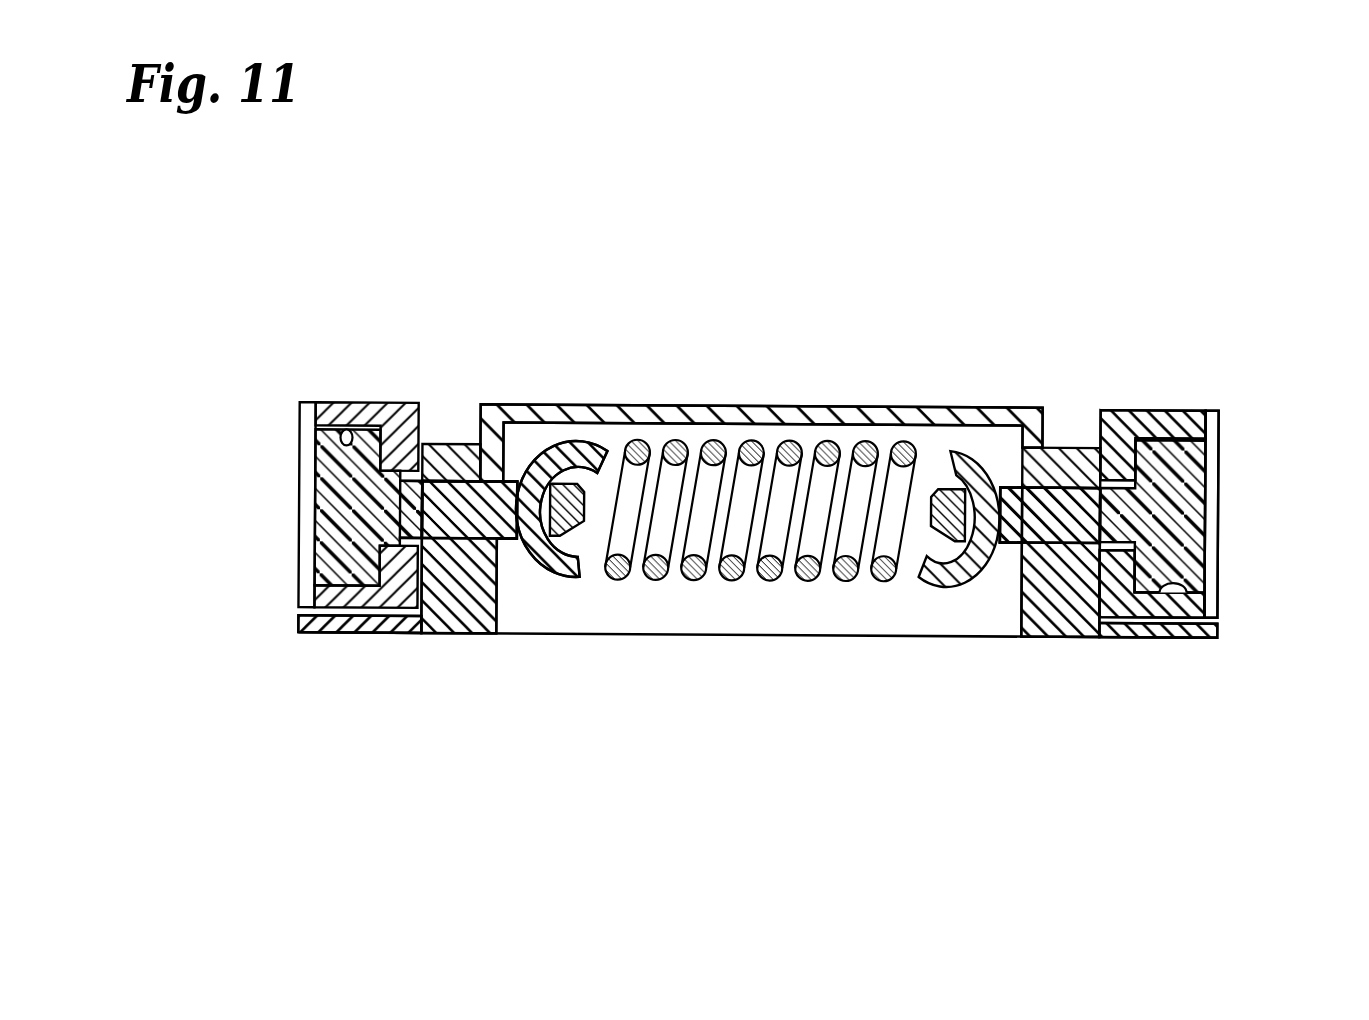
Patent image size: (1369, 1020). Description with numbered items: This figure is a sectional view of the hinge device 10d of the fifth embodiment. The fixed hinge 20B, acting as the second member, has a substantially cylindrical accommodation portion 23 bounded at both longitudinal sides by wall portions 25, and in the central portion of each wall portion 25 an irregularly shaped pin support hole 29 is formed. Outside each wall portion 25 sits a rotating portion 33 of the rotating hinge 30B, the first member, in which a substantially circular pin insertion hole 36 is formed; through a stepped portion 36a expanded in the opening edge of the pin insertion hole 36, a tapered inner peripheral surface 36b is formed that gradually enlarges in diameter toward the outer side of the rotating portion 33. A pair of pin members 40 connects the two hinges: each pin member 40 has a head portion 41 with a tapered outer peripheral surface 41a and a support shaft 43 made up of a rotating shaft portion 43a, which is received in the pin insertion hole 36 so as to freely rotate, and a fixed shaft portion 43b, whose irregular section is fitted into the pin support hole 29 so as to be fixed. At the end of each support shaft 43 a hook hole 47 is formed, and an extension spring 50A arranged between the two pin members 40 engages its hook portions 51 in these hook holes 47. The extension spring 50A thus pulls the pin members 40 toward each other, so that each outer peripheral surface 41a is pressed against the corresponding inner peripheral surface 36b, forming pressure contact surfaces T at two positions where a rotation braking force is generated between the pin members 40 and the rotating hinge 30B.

The hinge device 10d is at (749, 372).
The fixed hinge 20B is at (758, 438).
The accommodation portion 23 is at (903, 406).
The wall portion 25 is at (459, 620).
The pin support hole 29 is at (470, 446).
The rotating hinge 30B is at (1162, 392).
The rotating portion 33 is at (312, 406).
The pin insertion hole 36 is at (770, 501).
The stepped portion 36a is at (455, 446).
The inner peripheral surface 36b is at (366, 428).
The pin member 40 is at (513, 549).
The head portion 41 is at (335, 522).
The outer peripheral surface 41a is at (347, 432).
The support shaft 43 is at (682, 524).
The rotating shaft portion 43a is at (387, 523).
The fixed shaft portion 43b is at (522, 470).
The hook hole 47 is at (584, 548).
The extension spring 50A is at (733, 596).
The hook portion 51 is at (552, 572).
The pressure contact surface T is at (300, 276).